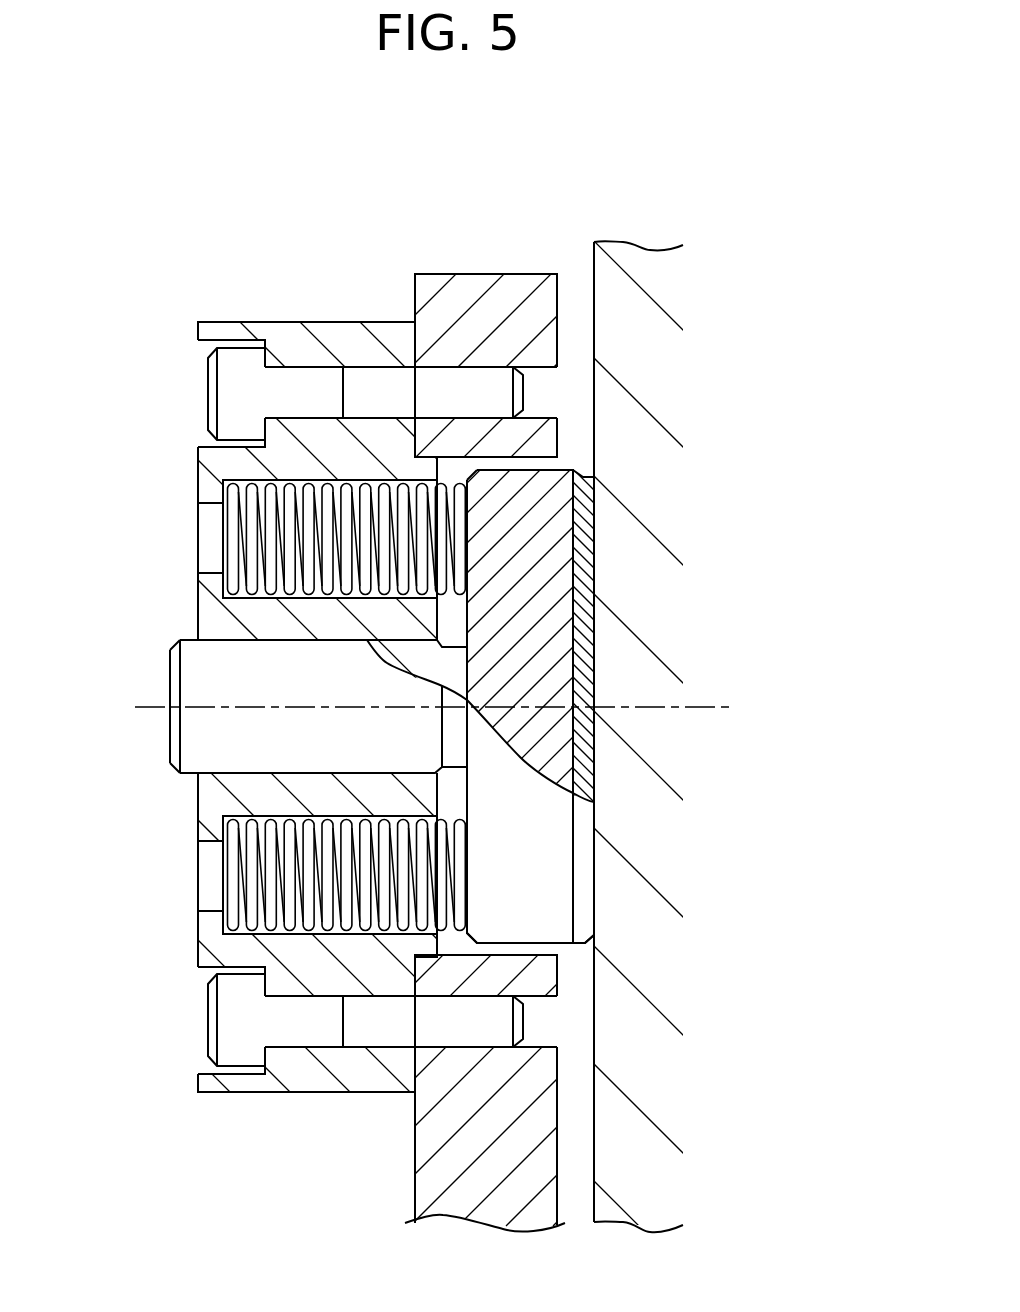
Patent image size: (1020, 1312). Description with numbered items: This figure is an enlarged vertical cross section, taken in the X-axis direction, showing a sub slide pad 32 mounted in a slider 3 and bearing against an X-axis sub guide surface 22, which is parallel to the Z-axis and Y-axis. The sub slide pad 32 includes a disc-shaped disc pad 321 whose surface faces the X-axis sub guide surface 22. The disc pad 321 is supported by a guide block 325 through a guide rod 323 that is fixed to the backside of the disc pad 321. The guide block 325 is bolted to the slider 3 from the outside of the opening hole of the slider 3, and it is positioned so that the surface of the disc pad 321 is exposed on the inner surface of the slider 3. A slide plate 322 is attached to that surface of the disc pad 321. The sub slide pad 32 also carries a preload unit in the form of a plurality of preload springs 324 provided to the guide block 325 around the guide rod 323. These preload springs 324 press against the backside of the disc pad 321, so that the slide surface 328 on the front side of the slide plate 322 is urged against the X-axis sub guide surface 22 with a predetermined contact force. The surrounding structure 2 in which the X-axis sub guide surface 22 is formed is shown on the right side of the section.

The support member 2 is at (613, 218).
The X-axis sub guide surface 22 is at (596, 408).
The slider 3 is at (435, 258).
The sub slide pad 32 is at (185, 283).
The disc pad 321 is at (527, 898).
The slide plate 322 is at (583, 865).
The guide rod 323 is at (203, 672).
The preload spring 324 is at (237, 532).
The guide block 325 is at (277, 322).
The slide surface 328 is at (594, 778).